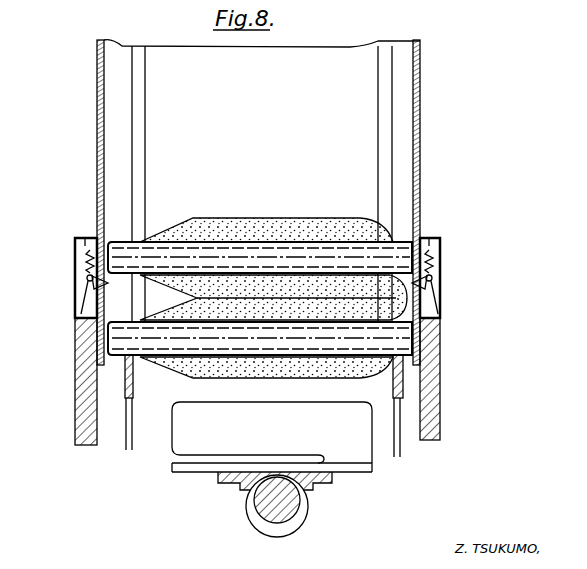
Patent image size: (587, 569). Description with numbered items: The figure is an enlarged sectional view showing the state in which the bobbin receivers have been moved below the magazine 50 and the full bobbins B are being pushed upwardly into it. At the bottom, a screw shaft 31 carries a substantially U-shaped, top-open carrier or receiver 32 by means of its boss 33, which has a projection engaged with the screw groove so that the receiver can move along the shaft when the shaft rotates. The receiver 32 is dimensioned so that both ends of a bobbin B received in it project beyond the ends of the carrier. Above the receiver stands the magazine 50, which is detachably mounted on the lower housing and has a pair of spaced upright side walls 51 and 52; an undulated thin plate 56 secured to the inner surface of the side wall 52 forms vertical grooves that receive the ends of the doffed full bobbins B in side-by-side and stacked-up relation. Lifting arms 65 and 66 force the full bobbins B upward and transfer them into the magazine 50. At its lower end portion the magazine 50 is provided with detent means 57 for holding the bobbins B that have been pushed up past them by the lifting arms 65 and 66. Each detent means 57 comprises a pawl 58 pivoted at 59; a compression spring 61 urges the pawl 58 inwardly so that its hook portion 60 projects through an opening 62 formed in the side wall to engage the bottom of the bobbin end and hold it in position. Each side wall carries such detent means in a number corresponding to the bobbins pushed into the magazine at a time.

The magazine 50 is at (421, 126).
The side wall 51 is at (97, 100).
The side wall 52 is at (417, 74).
The undulated plate 56 is at (412, 70).
The detent means 57 is at (70, 262).
The pawl 58 is at (85, 285).
The pivot 59 is at (80, 313).
The hook portion 60 is at (102, 280).
The compression spring 61 is at (86, 240).
The opening 62 is at (410, 299).
The lifting arm 65 is at (395, 438).
The lifting arm 66 is at (130, 441).
The carrier or receiver 32 is at (342, 466).
The screw shaft 31 is at (300, 519).
The boss 33 is at (256, 528).
The full bobbin B is at (340, 219).